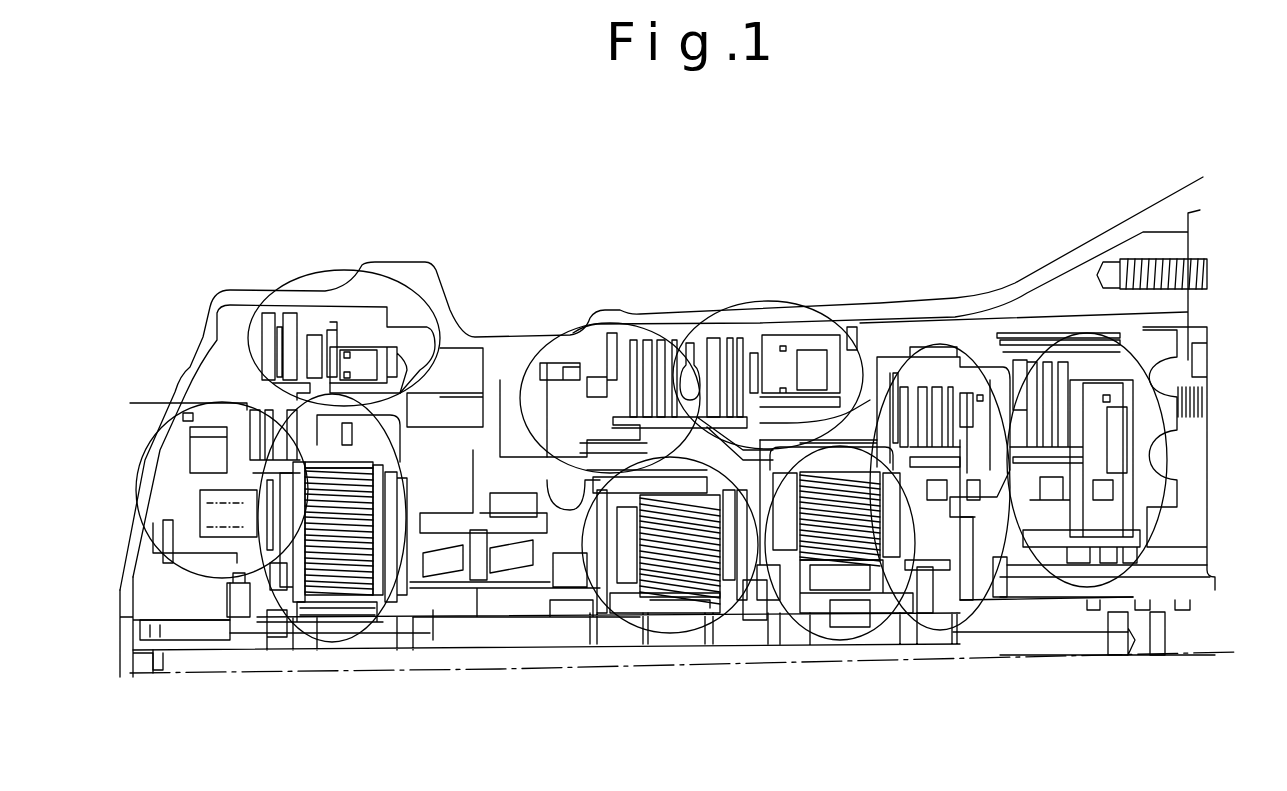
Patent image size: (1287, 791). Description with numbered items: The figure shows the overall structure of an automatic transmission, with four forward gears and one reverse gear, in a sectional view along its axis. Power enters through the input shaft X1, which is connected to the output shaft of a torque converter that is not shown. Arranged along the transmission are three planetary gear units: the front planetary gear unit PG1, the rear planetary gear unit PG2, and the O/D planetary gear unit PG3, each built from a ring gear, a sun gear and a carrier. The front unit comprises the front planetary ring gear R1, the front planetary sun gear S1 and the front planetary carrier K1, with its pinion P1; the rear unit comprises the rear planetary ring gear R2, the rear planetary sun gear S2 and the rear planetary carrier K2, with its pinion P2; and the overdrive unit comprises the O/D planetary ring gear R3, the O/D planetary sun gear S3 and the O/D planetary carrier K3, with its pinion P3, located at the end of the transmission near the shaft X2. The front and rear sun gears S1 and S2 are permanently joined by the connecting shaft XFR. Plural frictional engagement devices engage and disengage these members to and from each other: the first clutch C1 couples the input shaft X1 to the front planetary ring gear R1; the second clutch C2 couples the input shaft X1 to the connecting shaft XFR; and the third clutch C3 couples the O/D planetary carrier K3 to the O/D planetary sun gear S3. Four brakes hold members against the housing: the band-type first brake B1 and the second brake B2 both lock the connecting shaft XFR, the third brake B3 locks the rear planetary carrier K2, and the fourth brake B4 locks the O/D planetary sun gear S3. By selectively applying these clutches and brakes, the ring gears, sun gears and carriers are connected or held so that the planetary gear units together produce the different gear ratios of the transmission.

The fourth brake B4 is at (318, 292).
The third clutch C3 is at (183, 405).
The third brake B3 is at (673, 333).
The second brake B2 is at (768, 325).
The first clutch C1 is at (900, 353).
The band-type first brake B1 is at (1017, 337).
The second clutch C2 is at (1090, 333).
The second shaft X2 is at (222, 643).
The O/D planetary sun gear S3 is at (290, 560).
The third pinion gear P3 is at (345, 585).
The O/D planetary ring gear R3 is at (385, 560).
The O/D planetary carrier K3 is at (270, 590).
The O/D planetary gear unit PG3 is at (345, 660).
The rear planetary ring gear R2 is at (610, 612).
The rear planetary sun gear S2 is at (617, 598).
The second pinion gear P2 is at (680, 612).
The rear planetary carrier K2 is at (745, 600).
The front planetary sun gear S1 is at (790, 593).
The first pinion gear P1 is at (835, 605).
The front planetary carrier K1 is at (915, 600).
The rear planetary gear unit PG2 is at (668, 625).
The connecting shaft XFR is at (760, 598).
The front planetary gear unit PG1 is at (843, 650).
The front planetary ring gear R1 is at (950, 570).
The input shaft X1 is at (1187, 628).